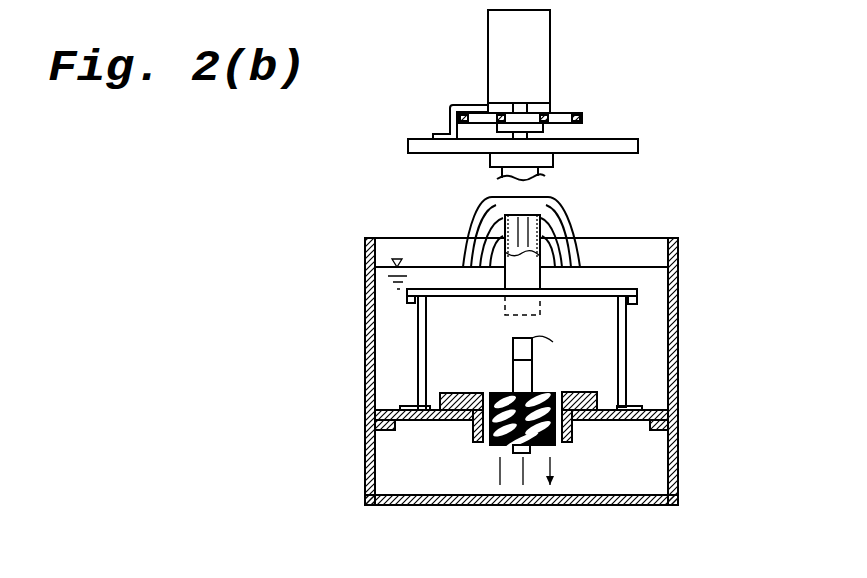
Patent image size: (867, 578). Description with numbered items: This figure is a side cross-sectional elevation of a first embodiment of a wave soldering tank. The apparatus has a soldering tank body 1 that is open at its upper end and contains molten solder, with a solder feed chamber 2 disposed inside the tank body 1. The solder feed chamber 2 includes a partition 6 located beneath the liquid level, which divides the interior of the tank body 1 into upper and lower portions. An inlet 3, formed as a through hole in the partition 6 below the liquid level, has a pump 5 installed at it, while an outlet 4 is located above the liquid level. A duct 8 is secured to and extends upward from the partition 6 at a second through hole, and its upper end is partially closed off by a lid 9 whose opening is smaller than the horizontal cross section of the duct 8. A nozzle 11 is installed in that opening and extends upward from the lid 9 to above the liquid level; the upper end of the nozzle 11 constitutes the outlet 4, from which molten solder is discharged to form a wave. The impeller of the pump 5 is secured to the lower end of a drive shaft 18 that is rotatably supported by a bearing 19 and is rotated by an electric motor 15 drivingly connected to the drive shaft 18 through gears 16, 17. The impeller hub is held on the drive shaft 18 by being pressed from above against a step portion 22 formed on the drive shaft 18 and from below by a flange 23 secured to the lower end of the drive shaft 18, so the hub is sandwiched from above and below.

The soldering tank body 1 is at (678, 290).
The solder feed chamber 2 is at (647, 473).
The inlet 3 is at (575, 422).
The outlet 4 is at (528, 213).
The pump 5 is at (575, 388).
The partition 6 is at (650, 410).
The duct 8 is at (627, 335).
The lid 9 is at (610, 288).
The nozzle 11 is at (538, 247).
The electric motor 15 is at (532, 58).
The gear 16 is at (527, 120).
The gear 17 is at (567, 118).
The drive shaft 18 is at (510, 345).
The bearing 19 is at (512, 173).
The step portion 22 is at (525, 377).
The flange 23 is at (515, 445).